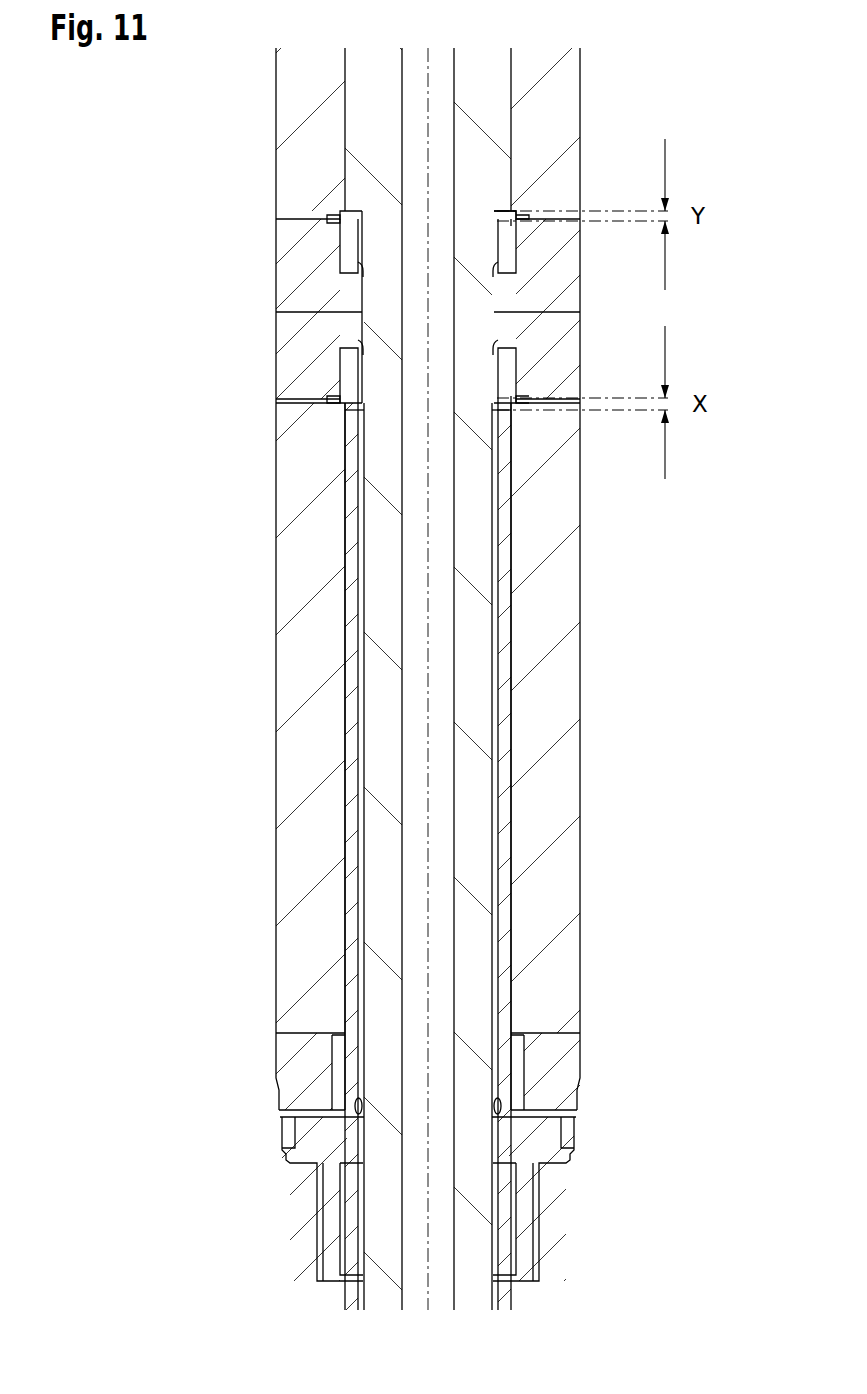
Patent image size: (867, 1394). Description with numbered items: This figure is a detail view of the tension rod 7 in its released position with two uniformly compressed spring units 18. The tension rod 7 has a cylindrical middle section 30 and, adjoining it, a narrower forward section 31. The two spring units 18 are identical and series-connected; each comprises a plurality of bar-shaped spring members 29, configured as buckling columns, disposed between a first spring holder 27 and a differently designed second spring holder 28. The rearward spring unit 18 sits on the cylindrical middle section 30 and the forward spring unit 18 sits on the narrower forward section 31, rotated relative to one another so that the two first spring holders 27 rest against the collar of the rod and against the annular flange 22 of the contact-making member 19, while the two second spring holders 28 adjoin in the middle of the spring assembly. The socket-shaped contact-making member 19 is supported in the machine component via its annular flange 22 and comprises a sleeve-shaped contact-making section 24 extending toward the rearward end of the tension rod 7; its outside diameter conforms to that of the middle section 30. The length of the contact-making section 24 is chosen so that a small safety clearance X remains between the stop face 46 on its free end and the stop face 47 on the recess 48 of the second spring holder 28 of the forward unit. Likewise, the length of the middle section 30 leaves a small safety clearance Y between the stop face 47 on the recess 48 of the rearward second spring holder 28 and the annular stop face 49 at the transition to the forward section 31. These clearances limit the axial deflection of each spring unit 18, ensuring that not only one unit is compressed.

The tension rod 7 is at (350, 735).
The spring unit 18 is at (600, 129).
The contact-making member 19 is at (386, 1185).
The annular flange 22 is at (537, 1135).
The sleeve-shaped contact-making section 24 is at (503, 634).
The first spring holder 27 is at (313, 1068).
The second spring holder 28 is at (314, 273).
The spring member 29 is at (558, 106).
The cylindrical middle section 30 is at (362, 119).
The narrower forward section 31 is at (382, 616).
The stop face 46 is at (511, 411).
The stop face 47 is at (510, 223).
The recess 48 is at (332, 217).
The annular stop face 49 is at (506, 211).